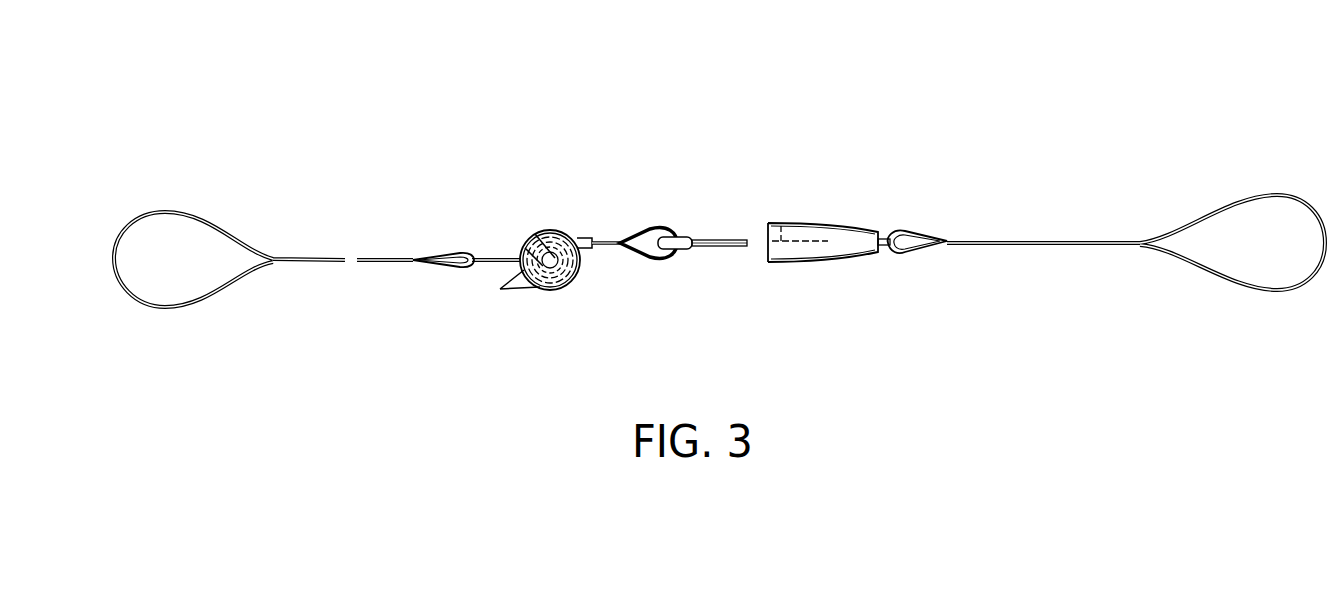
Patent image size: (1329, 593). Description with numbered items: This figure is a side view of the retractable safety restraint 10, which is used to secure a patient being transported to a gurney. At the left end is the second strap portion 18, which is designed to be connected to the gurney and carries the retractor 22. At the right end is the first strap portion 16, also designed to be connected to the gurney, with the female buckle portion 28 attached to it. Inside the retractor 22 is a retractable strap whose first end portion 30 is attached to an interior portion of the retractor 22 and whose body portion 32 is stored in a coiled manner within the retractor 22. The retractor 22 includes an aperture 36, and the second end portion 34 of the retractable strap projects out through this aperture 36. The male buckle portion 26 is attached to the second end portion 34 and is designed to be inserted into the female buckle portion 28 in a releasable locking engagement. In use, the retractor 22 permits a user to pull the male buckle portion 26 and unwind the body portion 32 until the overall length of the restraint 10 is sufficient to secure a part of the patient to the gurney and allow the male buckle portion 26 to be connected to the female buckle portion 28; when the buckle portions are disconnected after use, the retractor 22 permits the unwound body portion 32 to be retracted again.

The retractable safety restraint 10 is at (770, 137).
The first strap portion 16 is at (1047, 198).
The second strap portion 18 is at (328, 230).
The retractor 22 is at (548, 217).
The male buckle portion 26 is at (683, 250).
The female buckle portion 28 is at (847, 247).
The first end portion 30 is at (533, 237).
The body portion 32 is at (563, 295).
The second end portion 34 is at (606, 240).
The aperture 36 is at (594, 250).